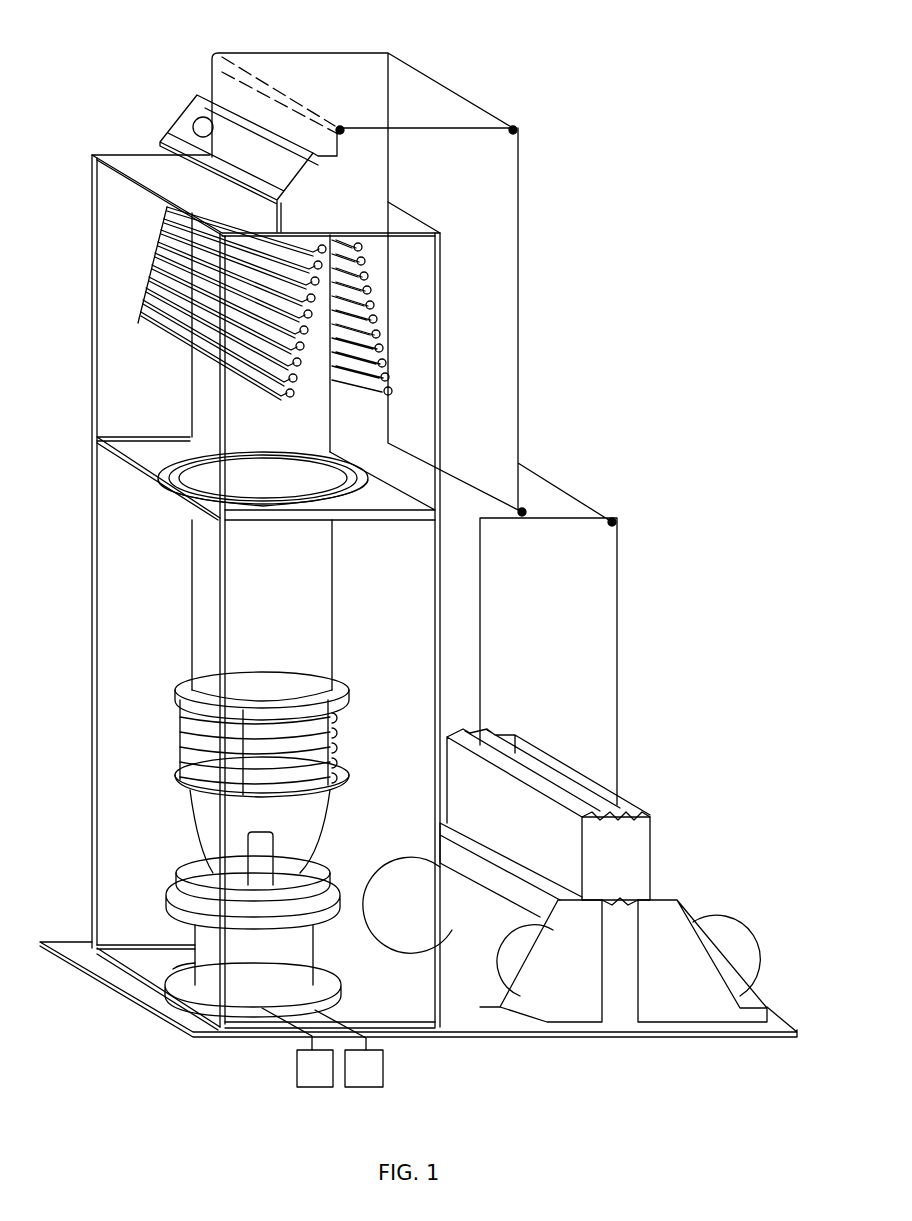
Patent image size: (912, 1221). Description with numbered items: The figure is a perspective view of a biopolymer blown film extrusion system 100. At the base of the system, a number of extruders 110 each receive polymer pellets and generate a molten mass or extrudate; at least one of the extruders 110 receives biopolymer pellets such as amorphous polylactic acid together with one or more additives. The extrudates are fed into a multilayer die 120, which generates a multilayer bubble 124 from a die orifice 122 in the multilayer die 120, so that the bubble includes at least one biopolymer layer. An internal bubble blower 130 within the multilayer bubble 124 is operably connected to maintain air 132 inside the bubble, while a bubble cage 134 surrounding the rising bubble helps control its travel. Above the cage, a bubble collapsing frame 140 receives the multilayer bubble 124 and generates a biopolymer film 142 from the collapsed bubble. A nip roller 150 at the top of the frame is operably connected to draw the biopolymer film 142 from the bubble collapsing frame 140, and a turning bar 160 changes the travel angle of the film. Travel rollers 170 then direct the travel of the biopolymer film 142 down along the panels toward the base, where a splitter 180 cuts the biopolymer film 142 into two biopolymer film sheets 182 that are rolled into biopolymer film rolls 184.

The biopolymer blown film extrusion system 100 is at (132, 42).
The extruders 110 is at (297, 1070).
The multilayer die 120 is at (208, 933).
The die orifice 122 is at (318, 872).
The multilayer bubble 124 is at (328, 645).
The internal bubble blower 130 is at (262, 852).
The air 132 is at (322, 805).
The bubble cage 134 is at (160, 706).
The bubble collapsing frame 140 is at (133, 322).
The biopolymer film 142 is at (222, 82).
The nip roller 150 is at (192, 130).
The turning bar 160 is at (341, 128).
The travel rollers 170 is at (518, 128).
The splitter 180 is at (644, 842).
The biopolymer film sheets 182 is at (677, 900).
The biopolymer film rolls 184 is at (735, 966).